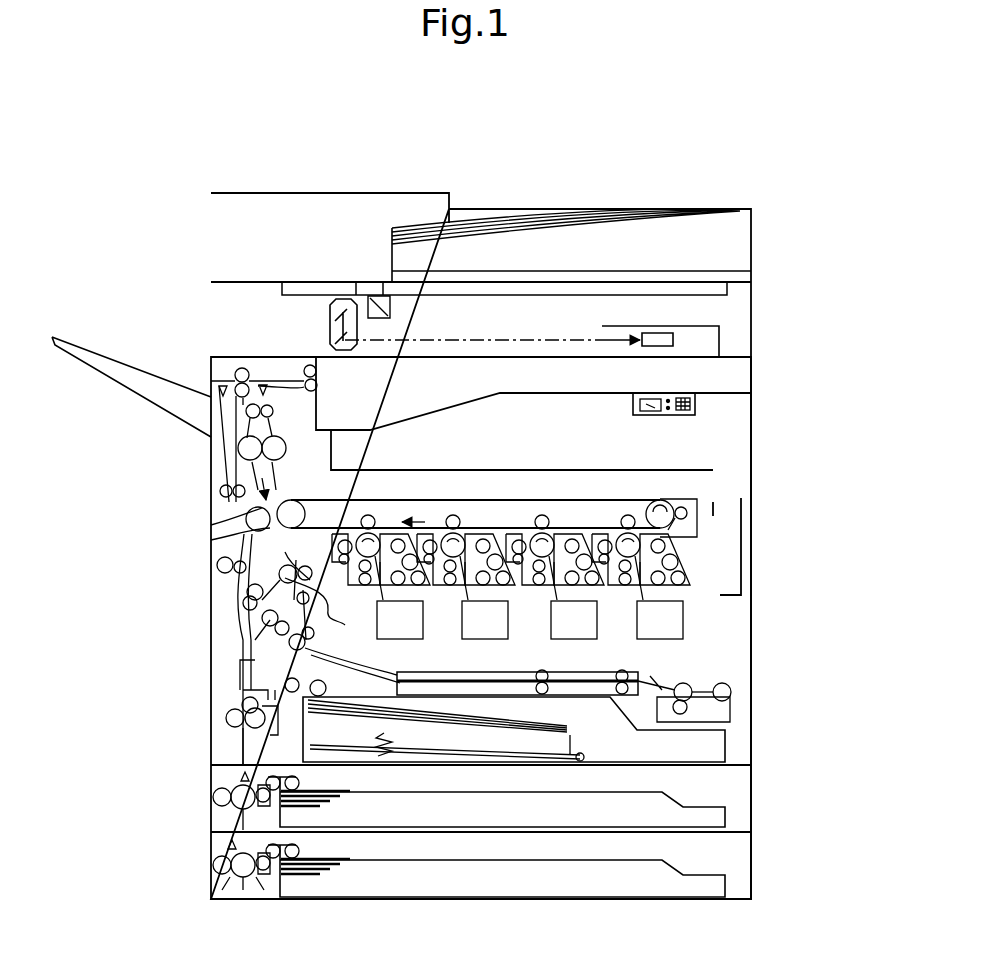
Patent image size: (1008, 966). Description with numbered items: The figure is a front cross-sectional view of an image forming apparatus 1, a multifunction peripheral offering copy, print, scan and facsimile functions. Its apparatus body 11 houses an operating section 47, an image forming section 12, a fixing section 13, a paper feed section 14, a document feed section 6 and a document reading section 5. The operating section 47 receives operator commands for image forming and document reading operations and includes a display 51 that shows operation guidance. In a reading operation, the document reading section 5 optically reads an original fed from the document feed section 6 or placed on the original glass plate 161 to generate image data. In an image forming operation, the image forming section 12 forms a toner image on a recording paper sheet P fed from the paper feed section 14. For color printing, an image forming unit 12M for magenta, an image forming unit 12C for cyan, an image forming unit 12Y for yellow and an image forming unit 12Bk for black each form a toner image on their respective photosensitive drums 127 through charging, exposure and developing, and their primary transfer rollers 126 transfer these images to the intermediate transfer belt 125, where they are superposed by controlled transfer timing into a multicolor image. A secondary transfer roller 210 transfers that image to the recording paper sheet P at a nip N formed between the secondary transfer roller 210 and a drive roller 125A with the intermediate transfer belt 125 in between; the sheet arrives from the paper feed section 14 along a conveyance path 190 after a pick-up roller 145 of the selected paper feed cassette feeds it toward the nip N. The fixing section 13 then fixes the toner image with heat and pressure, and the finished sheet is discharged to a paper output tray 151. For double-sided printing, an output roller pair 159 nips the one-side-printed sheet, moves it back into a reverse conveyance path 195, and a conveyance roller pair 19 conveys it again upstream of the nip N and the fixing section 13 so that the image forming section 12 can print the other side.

The image forming apparatus 1 is at (830, 264).
The document reading section 5 is at (190, 313).
The document feed section 6 is at (601, 194).
The apparatus body 11 is at (758, 413).
The image forming section 12 is at (582, 539).
The image forming unit for black 12Bk is at (376, 518).
The image forming unit for yellow 12Y is at (455, 516).
The image forming unit for cyan 12C is at (548, 517).
The image forming unit for magenta 12M is at (640, 539).
The fixing section 13 is at (232, 450).
The paper feed section 14 is at (703, 906).
The conveyance roller pair 19 is at (323, 612).
The operating section 47 is at (697, 409).
The display 51 is at (640, 396).
The intermediate transfer belt 125 is at (640, 498).
The drive roller 125A is at (288, 505).
The primary transfer roller 126 is at (624, 514).
The photosensitive drum 127 is at (633, 560).
The pick-up roller 145 is at (243, 858).
The paper output tray 151 is at (352, 426).
The output roller pair 159 is at (318, 367).
The original glass plate 161 is at (620, 290).
The conveyance path 190 is at (240, 528).
The reverse conveyance path 195 is at (252, 505).
The secondary transfer roller 210 is at (250, 533).
The nip N is at (247, 482).
The recording paper sheet P is at (556, 718).